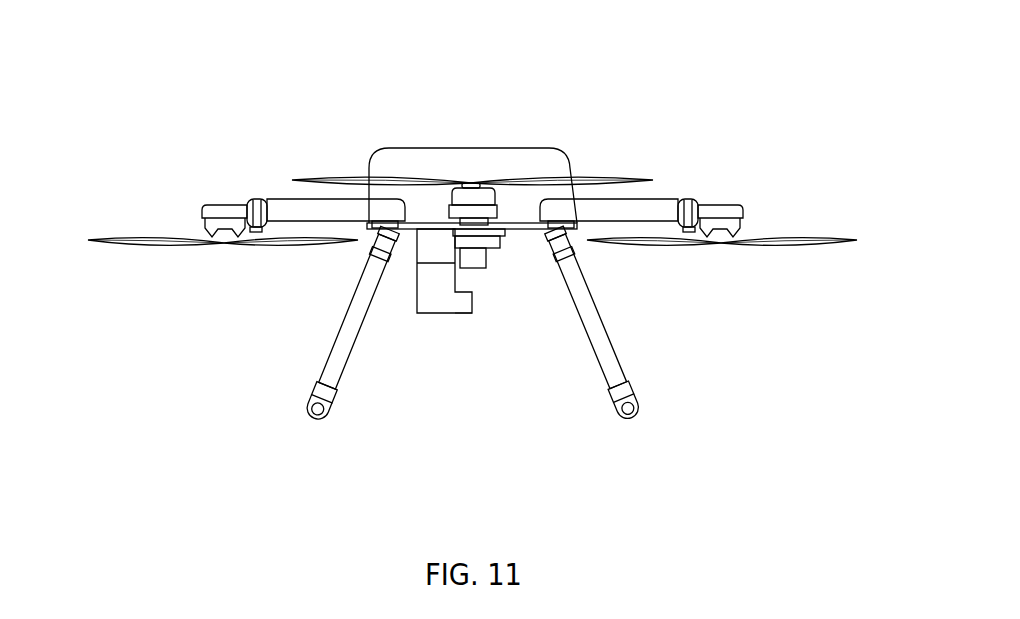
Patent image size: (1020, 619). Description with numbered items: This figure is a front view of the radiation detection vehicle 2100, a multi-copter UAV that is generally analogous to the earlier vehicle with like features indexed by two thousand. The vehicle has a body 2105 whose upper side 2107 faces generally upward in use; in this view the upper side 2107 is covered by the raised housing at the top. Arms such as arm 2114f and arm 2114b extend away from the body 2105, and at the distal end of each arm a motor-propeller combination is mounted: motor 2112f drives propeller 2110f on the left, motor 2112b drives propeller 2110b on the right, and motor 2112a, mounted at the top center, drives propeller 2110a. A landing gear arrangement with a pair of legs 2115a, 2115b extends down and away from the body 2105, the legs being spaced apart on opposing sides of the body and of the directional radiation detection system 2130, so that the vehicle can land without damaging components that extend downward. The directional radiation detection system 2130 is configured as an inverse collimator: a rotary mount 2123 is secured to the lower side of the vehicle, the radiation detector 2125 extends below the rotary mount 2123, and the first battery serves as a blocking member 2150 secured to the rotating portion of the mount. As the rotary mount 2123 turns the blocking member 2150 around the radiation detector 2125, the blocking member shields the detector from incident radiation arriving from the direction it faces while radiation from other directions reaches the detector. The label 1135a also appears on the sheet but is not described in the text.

The radiation detection vehicle 2100 is at (280, 90).
The body 2105 is at (427, 163).
The upper side 2107 is at (452, 132).
The propeller 2110a is at (583, 180).
The propeller 2110b is at (787, 242).
The propeller 2110f is at (148, 242).
The motor 2112a is at (480, 198).
The motor 2112b is at (737, 212).
The motor 2112f is at (208, 210).
The arm 2114b is at (658, 207).
The arm 2114f is at (293, 210).
The leg 2115a is at (337, 348).
The leg 2115b is at (608, 345).
The rotary mount 2123 is at (510, 233).
The radiation detector 2125 is at (473, 260).
The directional radiation detection system 2130 is at (470, 325).
The blocking member 2150 is at (437, 283).
The sensor 1135a is at (627, 500).